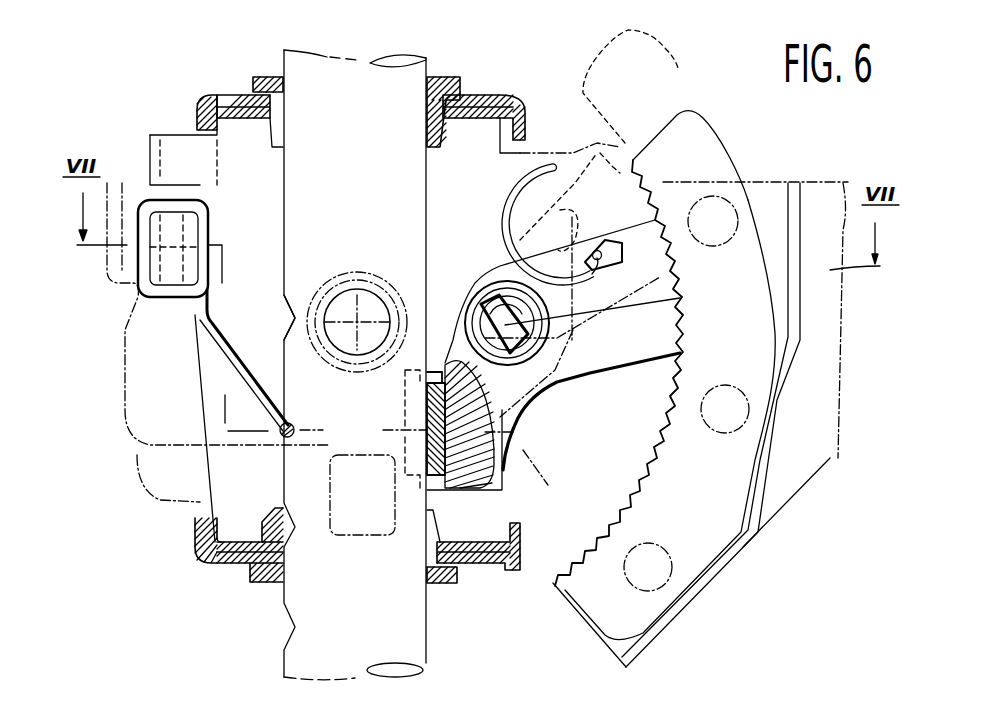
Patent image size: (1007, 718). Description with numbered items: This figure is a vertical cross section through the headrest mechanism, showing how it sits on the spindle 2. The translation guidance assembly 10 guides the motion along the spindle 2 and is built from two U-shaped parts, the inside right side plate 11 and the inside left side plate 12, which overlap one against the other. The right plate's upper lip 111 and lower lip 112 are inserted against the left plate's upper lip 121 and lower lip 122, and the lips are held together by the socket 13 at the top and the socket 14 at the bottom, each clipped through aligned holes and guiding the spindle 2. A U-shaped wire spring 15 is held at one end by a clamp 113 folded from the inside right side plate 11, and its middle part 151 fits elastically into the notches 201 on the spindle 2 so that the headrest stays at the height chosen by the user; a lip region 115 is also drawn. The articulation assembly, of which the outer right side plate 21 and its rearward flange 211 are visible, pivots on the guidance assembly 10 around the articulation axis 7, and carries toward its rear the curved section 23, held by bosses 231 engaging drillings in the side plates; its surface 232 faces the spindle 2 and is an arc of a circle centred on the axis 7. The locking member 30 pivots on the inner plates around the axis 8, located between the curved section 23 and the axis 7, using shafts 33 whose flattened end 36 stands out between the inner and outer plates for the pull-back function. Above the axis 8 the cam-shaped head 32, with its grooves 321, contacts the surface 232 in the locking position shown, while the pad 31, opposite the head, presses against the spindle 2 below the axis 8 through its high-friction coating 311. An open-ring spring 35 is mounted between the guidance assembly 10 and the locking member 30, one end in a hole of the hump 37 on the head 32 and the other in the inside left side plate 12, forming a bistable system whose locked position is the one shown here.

The spindle 2 is at (283, 50).
The articulation axis 7 is at (370, 313).
The axis 8 is at (503, 327).
The guidance assembly 10 is at (213, 630).
The inside right side plate 11 is at (237, 208).
The inside left side plate 12 is at (527, 113).
The socket 13 is at (437, 78).
The socket 14 is at (264, 590).
The spring 15 is at (230, 353).
The outer right side plate 21 is at (779, 185).
The curved section 23 is at (750, 363).
The locking member 30 is at (498, 345).
The pad 31 is at (482, 421).
The head 32 is at (663, 340).
The shaft 33 is at (482, 363).
The spring 35 is at (502, 210).
The flattened end 36 is at (520, 340).
The hump 37 is at (609, 240).
The upper lip 111 is at (203, 115).
The lower lip 112 is at (233, 550).
The clamp 113 is at (170, 303).
The wall 115 is at (150, 133).
The upper lip 121 is at (230, 95).
The lower lip 122 is at (197, 535).
The middle part of the spring 151 is at (280, 437).
The notches 201 is at (290, 320).
The flange 211 is at (800, 490).
The bosses 231 is at (660, 570).
The surface 232 is at (552, 562).
The coating 311 is at (427, 410).
The grooves 321 is at (710, 160).